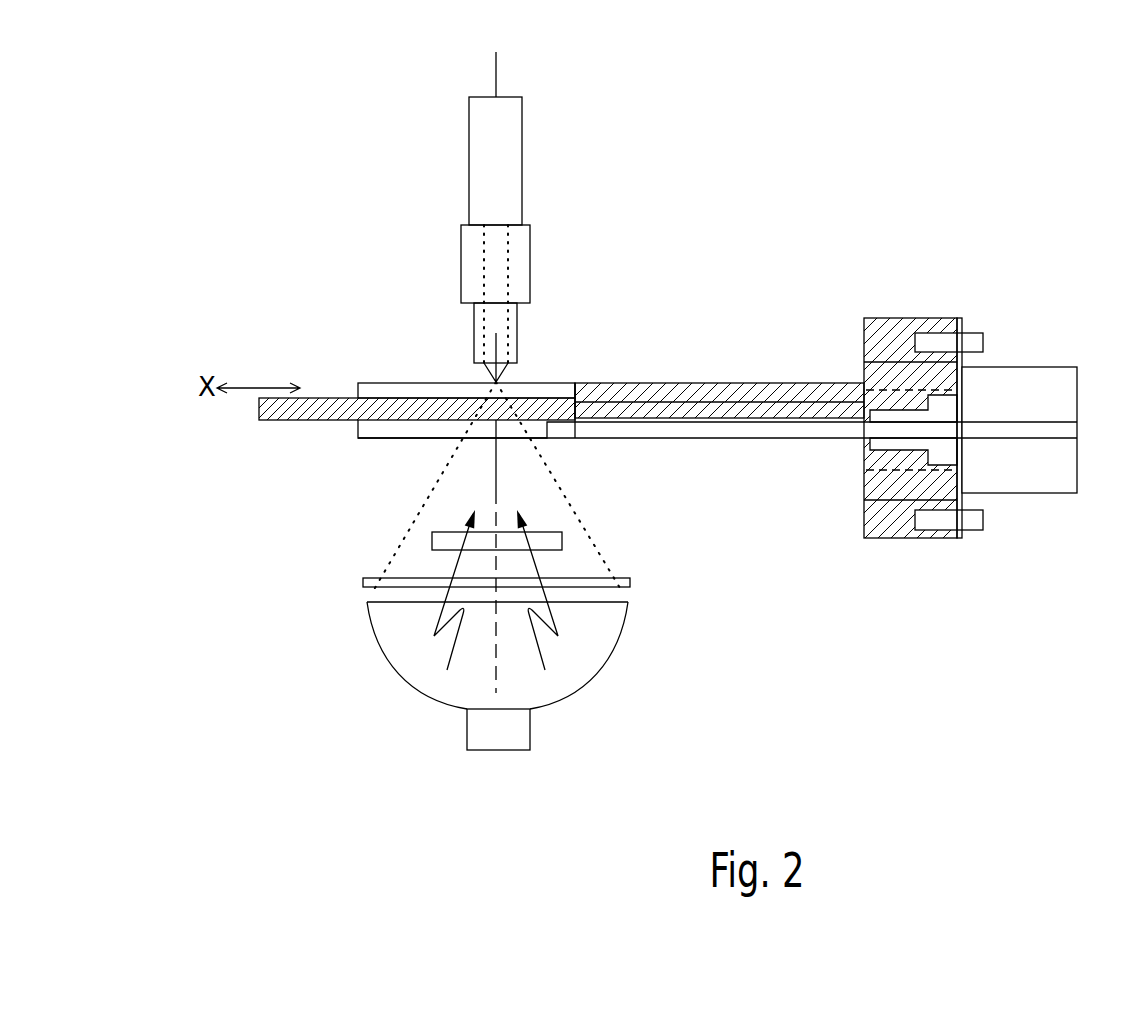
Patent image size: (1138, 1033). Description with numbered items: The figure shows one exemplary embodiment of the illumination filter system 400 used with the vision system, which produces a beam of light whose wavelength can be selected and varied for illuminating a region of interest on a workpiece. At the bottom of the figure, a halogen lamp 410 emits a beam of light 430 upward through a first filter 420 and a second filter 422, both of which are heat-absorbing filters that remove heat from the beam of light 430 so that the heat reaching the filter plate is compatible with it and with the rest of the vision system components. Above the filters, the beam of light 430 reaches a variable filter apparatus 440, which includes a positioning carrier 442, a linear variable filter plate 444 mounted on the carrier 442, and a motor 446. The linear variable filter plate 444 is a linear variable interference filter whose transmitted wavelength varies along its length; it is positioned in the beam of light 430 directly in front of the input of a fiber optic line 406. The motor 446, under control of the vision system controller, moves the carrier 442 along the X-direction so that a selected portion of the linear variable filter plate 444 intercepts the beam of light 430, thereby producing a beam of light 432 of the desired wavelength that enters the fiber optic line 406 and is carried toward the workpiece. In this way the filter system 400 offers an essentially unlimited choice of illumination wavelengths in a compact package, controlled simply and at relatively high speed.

The illumination filter system 400 is at (326, 185).
The fiber optic line 406 is at (520, 183).
The halogen lamp 410 is at (573, 673).
The first filter 420 is at (633, 583).
The second filter 422 is at (440, 530).
The beam of light 430 is at (573, 505).
The beam of light 432 is at (500, 381).
The variable filter apparatus 440 is at (708, 362).
The positioning carrier 442 is at (408, 385).
The linear variable filter plate 444 is at (275, 422).
The motor 446 is at (1028, 493).